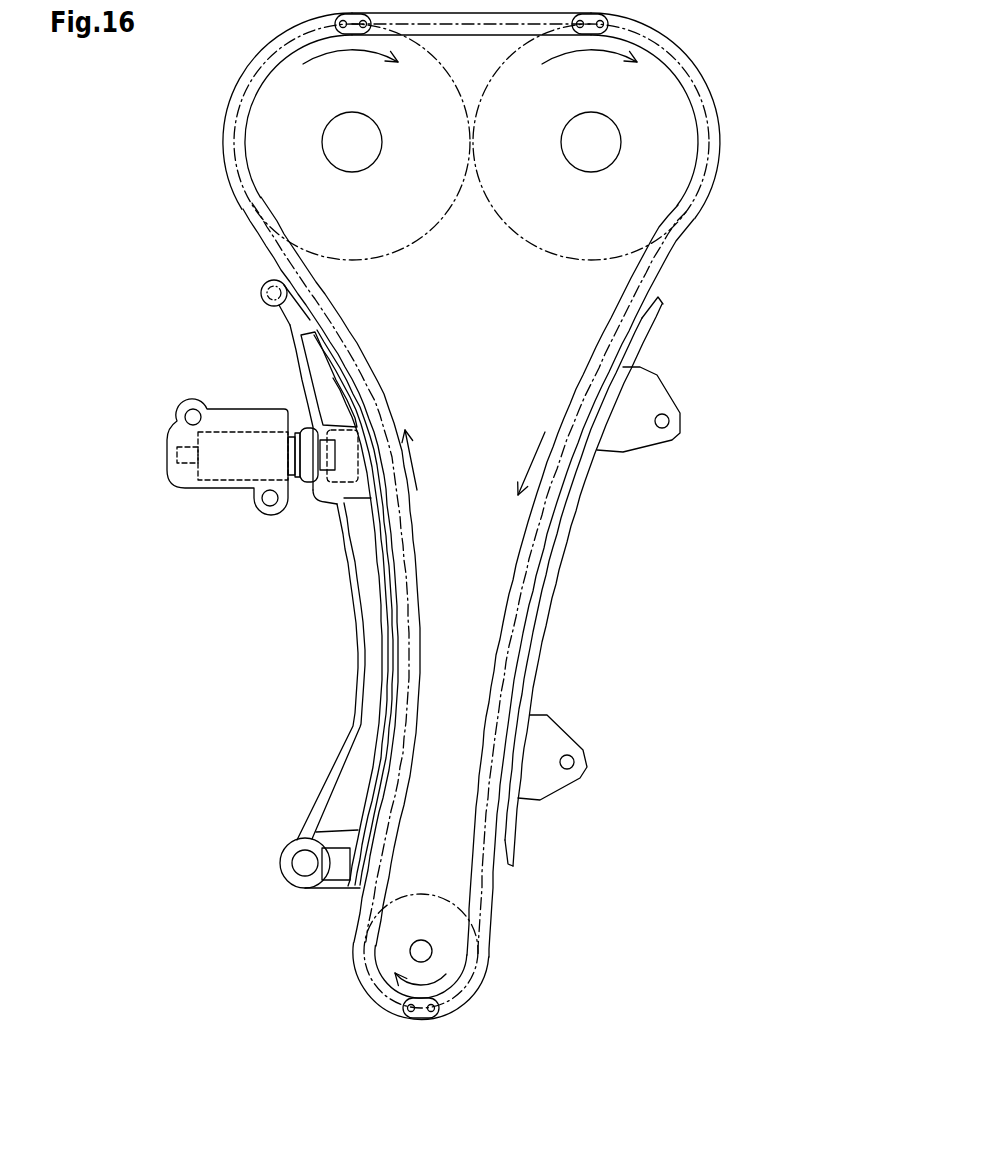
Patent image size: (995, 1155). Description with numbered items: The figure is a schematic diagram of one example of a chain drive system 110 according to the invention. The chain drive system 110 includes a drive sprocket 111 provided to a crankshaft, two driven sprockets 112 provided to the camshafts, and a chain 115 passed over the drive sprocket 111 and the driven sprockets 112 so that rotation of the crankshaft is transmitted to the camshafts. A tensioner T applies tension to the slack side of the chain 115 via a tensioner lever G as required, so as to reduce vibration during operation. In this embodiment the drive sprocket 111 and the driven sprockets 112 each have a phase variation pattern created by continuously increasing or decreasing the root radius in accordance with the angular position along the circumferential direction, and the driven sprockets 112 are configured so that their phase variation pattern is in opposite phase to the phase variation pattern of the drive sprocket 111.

The chain drive system 110 is at (440, 1064).
The drive sprocket 111 is at (432, 951).
The driven sprockets 112 is at (270, 142).
The chain 115 is at (670, 250).
The tensioner T is at (166, 406).
The tensioner lever G is at (370, 737).